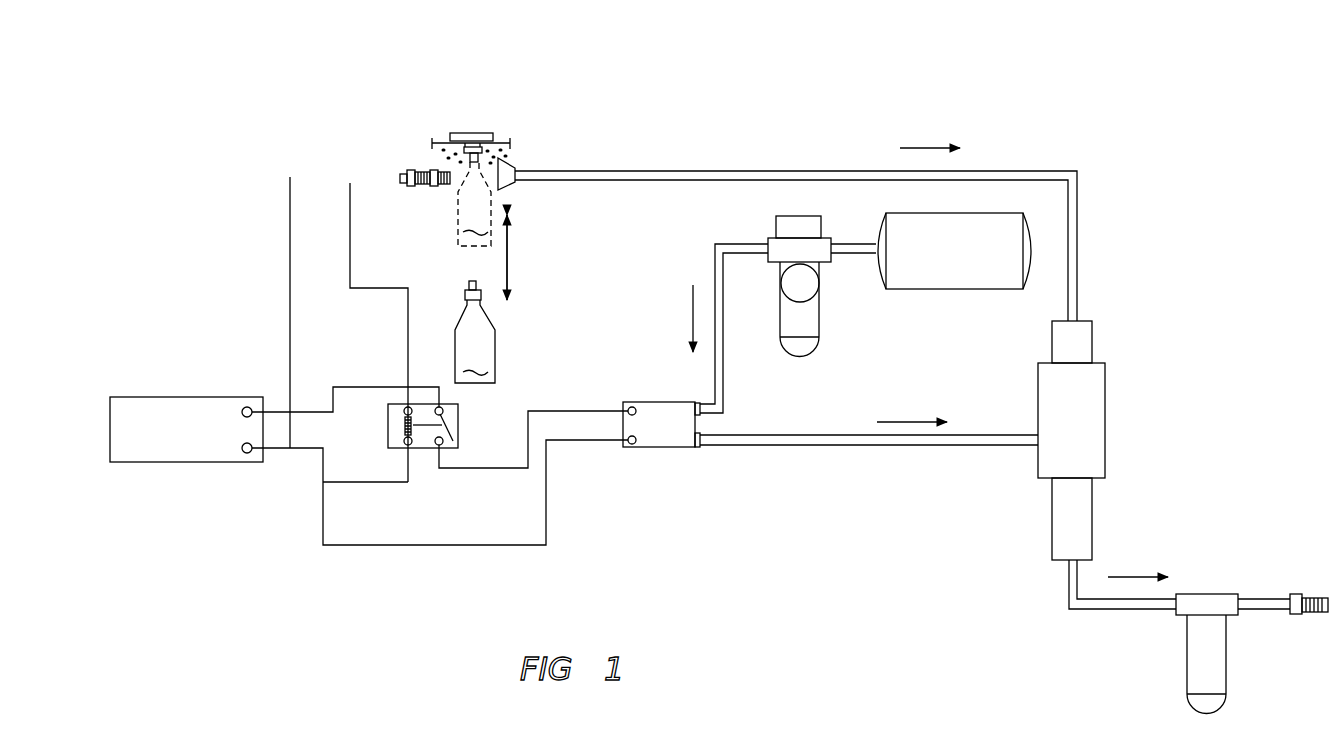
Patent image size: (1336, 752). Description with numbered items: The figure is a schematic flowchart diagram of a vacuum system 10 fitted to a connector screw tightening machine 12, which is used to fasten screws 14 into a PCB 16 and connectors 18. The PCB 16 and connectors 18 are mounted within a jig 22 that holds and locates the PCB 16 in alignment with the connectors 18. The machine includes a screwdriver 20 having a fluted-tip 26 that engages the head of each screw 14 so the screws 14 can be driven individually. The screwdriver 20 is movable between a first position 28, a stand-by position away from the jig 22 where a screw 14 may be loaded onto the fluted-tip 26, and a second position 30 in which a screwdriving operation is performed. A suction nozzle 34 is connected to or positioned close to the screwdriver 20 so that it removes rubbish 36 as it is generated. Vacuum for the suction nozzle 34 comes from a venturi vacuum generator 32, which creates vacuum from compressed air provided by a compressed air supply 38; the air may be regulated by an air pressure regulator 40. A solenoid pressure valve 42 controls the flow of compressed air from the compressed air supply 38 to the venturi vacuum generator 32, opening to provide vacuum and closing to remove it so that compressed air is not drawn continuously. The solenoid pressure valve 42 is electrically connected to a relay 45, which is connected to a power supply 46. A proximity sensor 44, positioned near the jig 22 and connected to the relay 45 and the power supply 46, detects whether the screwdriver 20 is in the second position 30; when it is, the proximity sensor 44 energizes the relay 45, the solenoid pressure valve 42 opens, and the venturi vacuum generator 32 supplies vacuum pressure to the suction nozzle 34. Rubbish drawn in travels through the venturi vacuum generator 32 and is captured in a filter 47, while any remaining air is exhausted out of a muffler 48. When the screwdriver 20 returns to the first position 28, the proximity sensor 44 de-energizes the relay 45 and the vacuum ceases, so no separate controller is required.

The vacuum system 10 is at (236, 116).
The connector screw tightening machine 12 is at (535, 280).
The screws 14 is at (445, 155).
The PCB 16 is at (465, 133).
The connectors 18 is at (490, 133).
The screwdriver 20 is at (477, 289).
The jig 22 is at (505, 140).
The fluted-tip 26 is at (455, 163).
The first position 28 is at (500, 358).
The second position 30 is at (448, 226).
The venturi vacuum generator 32 is at (1090, 438).
The suction nozzle 34 is at (505, 180).
The rubbish 36 is at (505, 160).
The compressed air supply 38 is at (935, 290).
The air pressure regulator 40 is at (822, 318).
The solenoid pressure valve 42 is at (660, 430).
The proximity sensor 44 is at (420, 186).
The relay 45 is at (462, 426).
The power supply 46 is at (192, 410).
The filter 47 is at (1200, 655).
The muffler 48 is at (1312, 595).